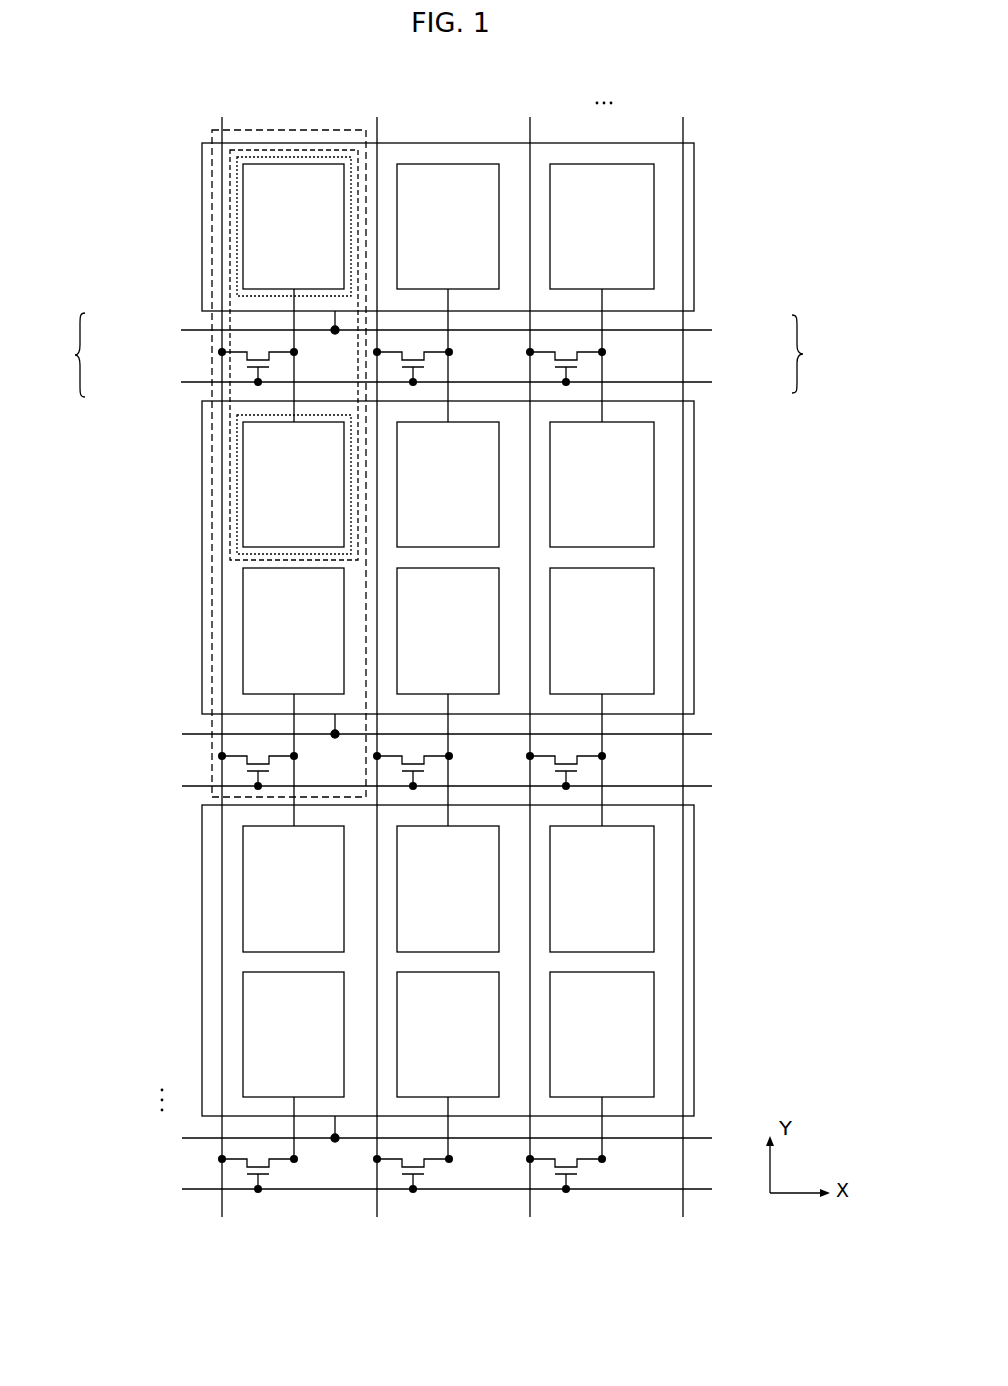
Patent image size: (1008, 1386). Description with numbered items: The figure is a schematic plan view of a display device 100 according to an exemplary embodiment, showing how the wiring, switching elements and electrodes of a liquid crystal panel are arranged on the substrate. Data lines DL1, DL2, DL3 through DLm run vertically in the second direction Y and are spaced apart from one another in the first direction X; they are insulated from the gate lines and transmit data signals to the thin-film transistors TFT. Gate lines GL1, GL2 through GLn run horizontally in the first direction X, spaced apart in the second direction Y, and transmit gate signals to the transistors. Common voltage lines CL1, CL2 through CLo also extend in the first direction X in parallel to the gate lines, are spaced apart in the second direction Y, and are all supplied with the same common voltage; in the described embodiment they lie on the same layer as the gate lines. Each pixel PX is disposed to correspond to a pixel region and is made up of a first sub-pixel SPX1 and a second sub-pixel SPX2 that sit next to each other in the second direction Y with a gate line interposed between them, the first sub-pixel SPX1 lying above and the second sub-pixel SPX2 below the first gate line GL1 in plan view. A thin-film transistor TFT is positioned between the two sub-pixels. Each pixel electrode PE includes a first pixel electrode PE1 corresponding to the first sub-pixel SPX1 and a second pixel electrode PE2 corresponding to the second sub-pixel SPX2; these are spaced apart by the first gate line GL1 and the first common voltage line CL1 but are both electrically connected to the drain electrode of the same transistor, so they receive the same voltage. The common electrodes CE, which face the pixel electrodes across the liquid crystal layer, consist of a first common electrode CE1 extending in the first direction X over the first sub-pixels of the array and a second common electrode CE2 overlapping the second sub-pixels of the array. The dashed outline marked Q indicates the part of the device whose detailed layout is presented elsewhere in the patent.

The display device 100 is at (776, 145).
The first data line DL1 is at (218, 654).
The second data line DL2 is at (377, 654).
The third data line DL3 is at (529, 654).
The m-th data line DLm is at (684, 654).
The pixel PX is at (283, 150).
The first sub-pixel SPX1 is at (312, 157).
The second sub-pixel SPX2 is at (237, 502).
The part Q is at (212, 192).
The first pixel electrode PE1 is at (243, 248).
The second pixel electrode PE2 is at (243, 477).
The pixel electrode PE is at (67, 355).
The first common voltage line CL1 is at (427, 326).
The first gate line GL1 is at (427, 382).
The thin-film transistor TFT is at (412, 763).
The second common voltage line CL2 is at (427, 730).
The second gate line GL2 is at (427, 786).
The first common electrode CE1 is at (694, 228).
The second common electrode CE2 is at (694, 483).
The common electrode CE is at (811, 354).
The o-th common voltage line CLo is at (427, 1133).
The n-th gate line GLn is at (427, 1189).